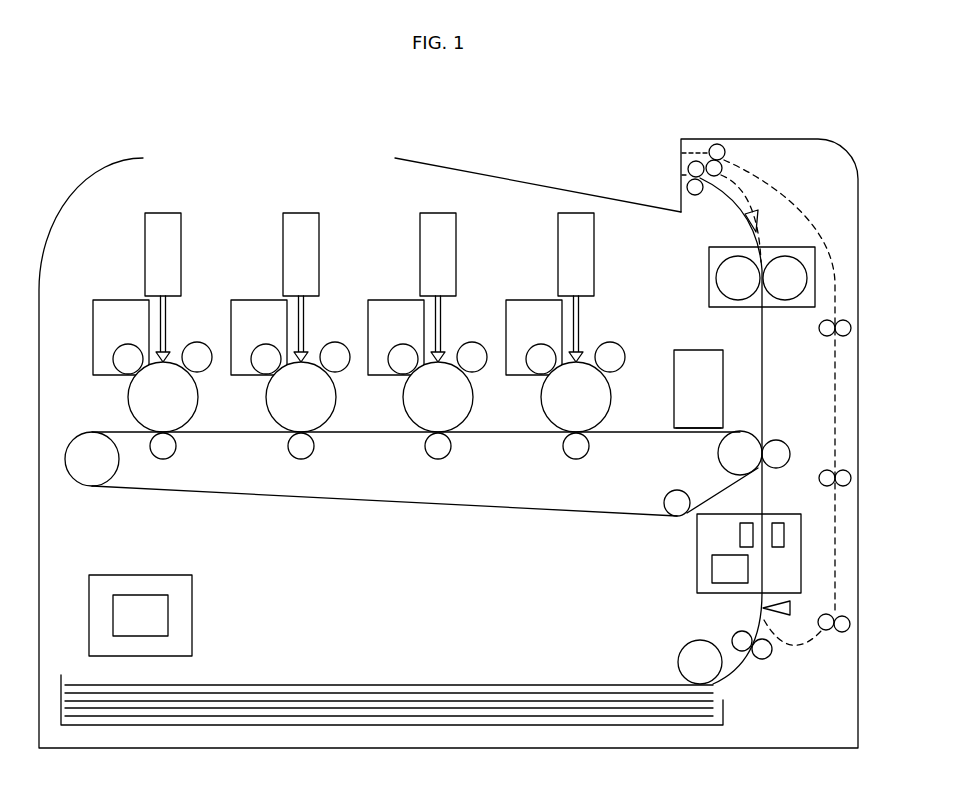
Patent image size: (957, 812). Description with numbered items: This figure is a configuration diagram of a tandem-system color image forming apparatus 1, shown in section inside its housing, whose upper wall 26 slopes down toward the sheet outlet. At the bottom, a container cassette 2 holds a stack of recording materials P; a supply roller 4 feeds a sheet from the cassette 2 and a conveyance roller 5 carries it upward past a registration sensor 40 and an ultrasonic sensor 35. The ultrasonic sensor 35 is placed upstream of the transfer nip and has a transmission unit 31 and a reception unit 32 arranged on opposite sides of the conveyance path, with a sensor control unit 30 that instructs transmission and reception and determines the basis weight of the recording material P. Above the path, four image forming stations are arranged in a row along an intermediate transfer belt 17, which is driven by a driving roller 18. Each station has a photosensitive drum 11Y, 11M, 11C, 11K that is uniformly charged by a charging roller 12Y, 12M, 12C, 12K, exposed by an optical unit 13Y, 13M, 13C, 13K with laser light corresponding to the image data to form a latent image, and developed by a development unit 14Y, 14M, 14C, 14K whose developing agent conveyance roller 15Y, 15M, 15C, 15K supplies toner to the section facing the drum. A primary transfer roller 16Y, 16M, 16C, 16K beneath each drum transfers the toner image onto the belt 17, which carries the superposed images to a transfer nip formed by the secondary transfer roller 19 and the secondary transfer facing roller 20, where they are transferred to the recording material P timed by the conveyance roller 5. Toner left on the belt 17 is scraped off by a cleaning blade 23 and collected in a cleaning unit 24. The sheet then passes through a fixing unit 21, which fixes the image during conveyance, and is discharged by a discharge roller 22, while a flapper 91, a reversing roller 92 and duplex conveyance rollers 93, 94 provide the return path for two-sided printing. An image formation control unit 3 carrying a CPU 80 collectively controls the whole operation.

The image forming apparatus 1 is at (82, 184).
The top cover 26 is at (496, 177).
The optical unit 13K is at (163, 212).
The optical unit 13C is at (301, 212).
The optical unit 13M is at (438, 212).
The optical unit 13Y is at (576, 212).
The development unit 14K is at (97, 300).
The development unit 14C is at (235, 300).
The development unit 14M is at (372, 300).
The development unit 14Y is at (510, 300).
The developing agent conveyance roller 15K is at (124, 364).
The developing agent conveyance roller 15C is at (262, 364).
The developing agent conveyance roller 15M is at (399, 364).
The developing agent conveyance roller 15Y is at (537, 364).
The charging roller 12K is at (194, 352).
The charging roller 12C is at (332, 352).
The charging roller 12M is at (469, 352).
The charging roller 12Y is at (607, 352).
The photosensitive drum 11K is at (191, 404).
The photosensitive drum 11C is at (329, 404).
The photosensitive drum 11M is at (466, 404).
The photosensitive drum 11Y is at (604, 404).
The primary transfer roller 16K is at (171, 453).
The primary transfer roller 16C is at (309, 453).
The primary transfer roller 16M is at (446, 453).
The primary transfer roller 16Y is at (584, 453).
The belt 17 is at (404, 506).
The driving roller 18 is at (93, 476).
The secondary transfer roller 19 is at (776, 446).
The secondary transfer facing roller 20 is at (742, 440).
The fixing unit 21 is at (790, 308).
The discharge roller 22 is at (686, 188).
The cleaning blade 23 is at (692, 428).
The cleaning unit 24 is at (700, 350).
The reversing roller 92 is at (717, 144).
The flapper 91 is at (745, 224).
The duplex conveyance roller 93 is at (848, 322).
The duplex conveyance roller 94 is at (844, 617).
The ultrasonic sensor 35 is at (697, 590).
The reception unit 32 is at (740, 535).
The transmission unit 31 is at (784, 535).
The ultrasonic sensor control unit 30 is at (712, 570).
The registration sensor 40 is at (791, 607).
The conveyance roller 5 is at (740, 631).
The supply roller 4 is at (700, 656).
The recording material P is at (436, 685).
The container cassette 2 is at (723, 712).
The image formation control unit 3 is at (192, 595).
The CPU 80 is at (137, 595).